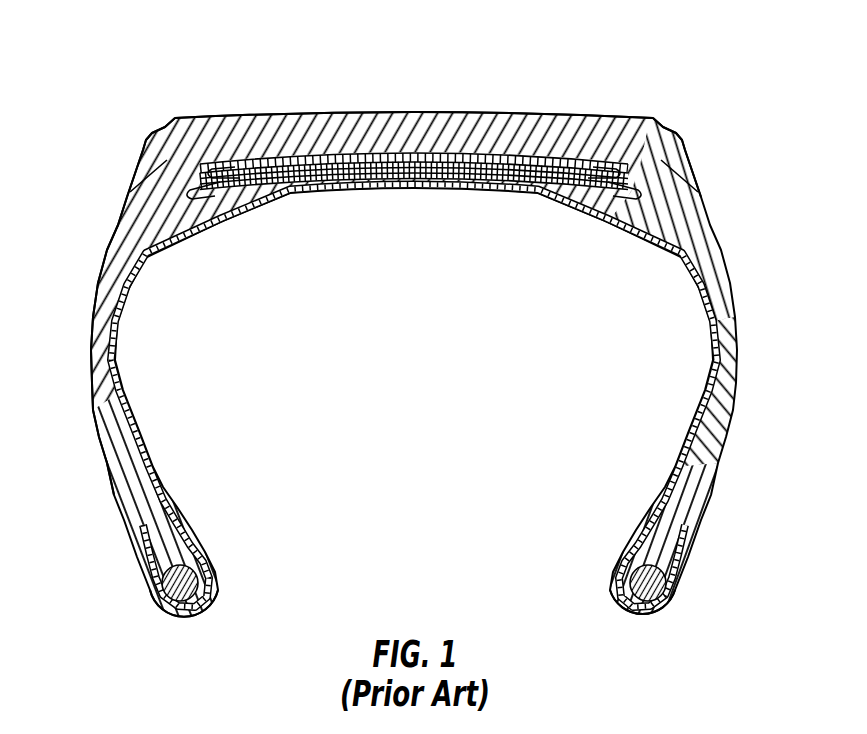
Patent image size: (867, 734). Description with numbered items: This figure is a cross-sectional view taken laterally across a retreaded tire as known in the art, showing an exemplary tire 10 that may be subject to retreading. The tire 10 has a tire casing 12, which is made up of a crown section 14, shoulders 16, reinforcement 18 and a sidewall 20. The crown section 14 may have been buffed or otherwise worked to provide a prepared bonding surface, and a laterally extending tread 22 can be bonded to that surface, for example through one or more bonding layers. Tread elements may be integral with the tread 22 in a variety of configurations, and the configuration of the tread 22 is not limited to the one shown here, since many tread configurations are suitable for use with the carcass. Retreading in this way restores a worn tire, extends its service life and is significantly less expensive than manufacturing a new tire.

The tire 10 is at (134, 68).
The tire casing 12 is at (90, 347).
The crown section 14 is at (657, 203).
The shoulders 16 is at (118, 194).
The reinforcement 18 is at (221, 200).
The sidewall 20 is at (728, 458).
The tread 22 is at (488, 106).